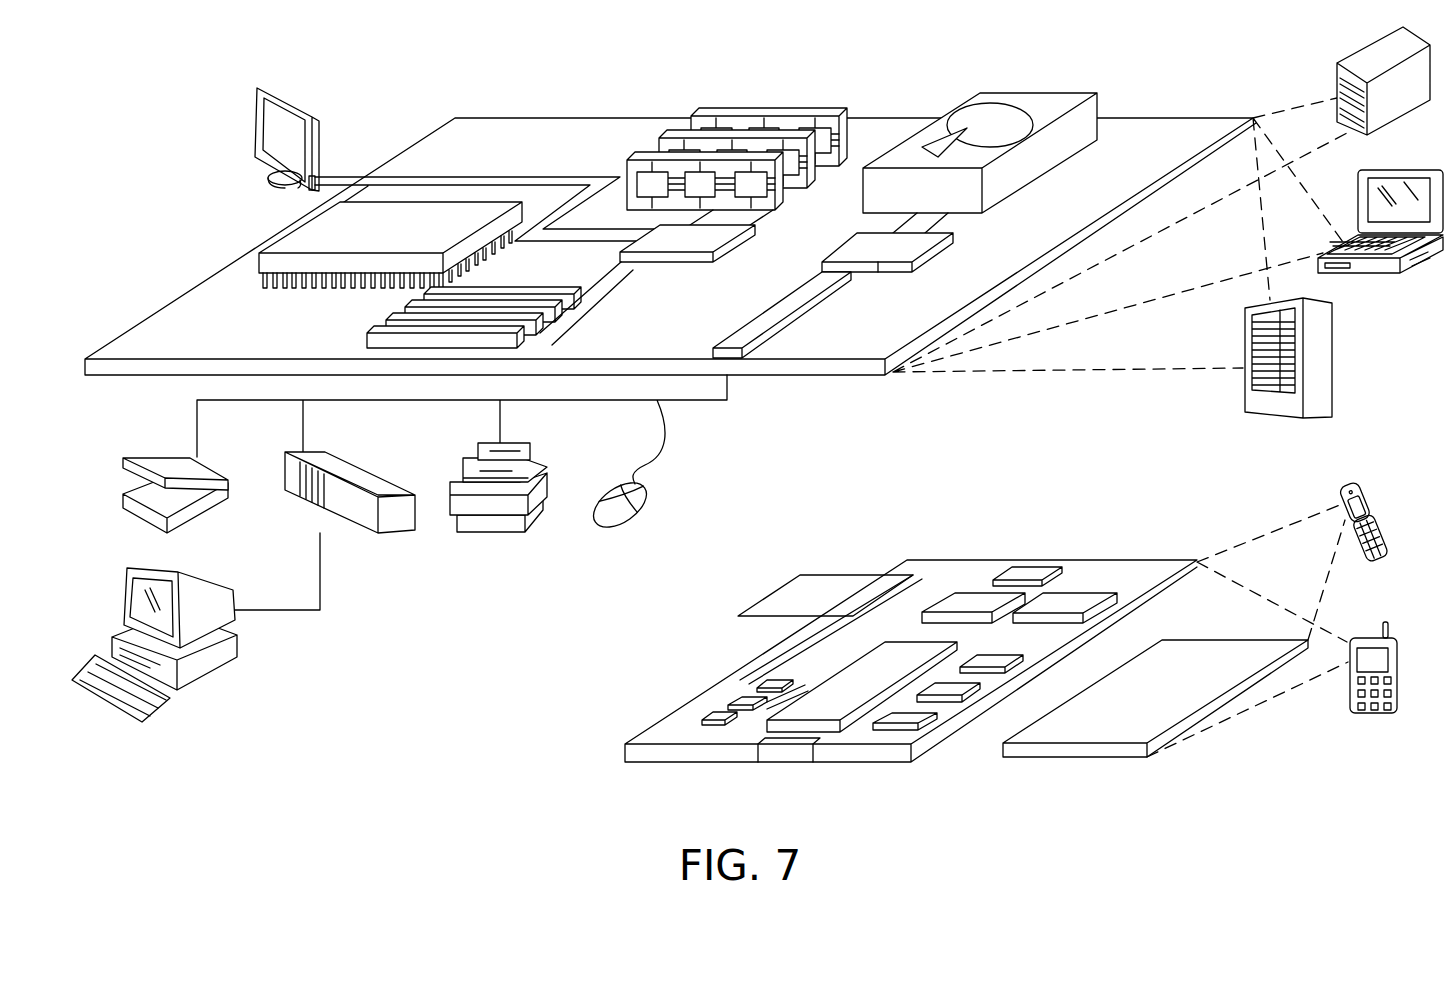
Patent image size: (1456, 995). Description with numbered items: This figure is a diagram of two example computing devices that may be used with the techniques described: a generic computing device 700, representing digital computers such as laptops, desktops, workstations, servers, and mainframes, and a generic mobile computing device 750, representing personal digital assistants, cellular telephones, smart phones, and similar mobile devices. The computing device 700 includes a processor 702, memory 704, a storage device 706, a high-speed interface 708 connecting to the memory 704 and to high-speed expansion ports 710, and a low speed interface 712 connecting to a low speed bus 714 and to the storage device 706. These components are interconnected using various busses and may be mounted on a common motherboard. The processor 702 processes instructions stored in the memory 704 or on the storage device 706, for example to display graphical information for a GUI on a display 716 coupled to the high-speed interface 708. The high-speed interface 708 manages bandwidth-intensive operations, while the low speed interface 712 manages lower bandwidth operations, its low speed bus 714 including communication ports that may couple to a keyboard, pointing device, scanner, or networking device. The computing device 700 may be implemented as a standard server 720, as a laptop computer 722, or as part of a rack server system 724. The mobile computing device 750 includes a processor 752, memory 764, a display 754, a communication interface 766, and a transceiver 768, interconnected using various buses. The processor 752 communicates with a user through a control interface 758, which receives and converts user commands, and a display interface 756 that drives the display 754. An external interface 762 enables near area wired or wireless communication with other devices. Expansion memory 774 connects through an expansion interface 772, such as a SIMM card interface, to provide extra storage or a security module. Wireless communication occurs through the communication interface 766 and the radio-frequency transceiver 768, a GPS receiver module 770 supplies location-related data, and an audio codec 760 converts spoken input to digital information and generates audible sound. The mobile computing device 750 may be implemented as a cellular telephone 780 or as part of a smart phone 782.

The computing device 700 is at (709, 410).
The processor 702 is at (287, 230).
The memory 704 is at (775, 110).
The storage device 706 is at (1027, 92).
The high-speed interface 708 is at (703, 240).
The high-speed expansion ports 710 is at (397, 314).
The low speed interface 712 is at (858, 240).
The low speed bus 714 is at (737, 346).
The display 716 is at (262, 88).
The standard server 720 is at (1360, 60).
The laptop computer 722 is at (1418, 168).
The rack server system 724 is at (1335, 358).
The mobile computing device 750 is at (582, 770).
The processor 752 is at (830, 692).
The display 754 is at (1197, 655).
The display interface 756 is at (913, 720).
The control interface 758 is at (953, 692).
The audio codec 760 is at (987, 655).
The external interface 762 is at (785, 750).
The memory 764 is at (733, 700).
The communication interface 766 is at (972, 600).
The transceiver 768 is at (1073, 595).
The GPS receiver module 770 is at (1030, 567).
The expansion interface 772 is at (888, 577).
The expansion memory 774 is at (800, 575).
The cellular telephone 780 is at (1355, 478).
The smart phone 782 is at (1368, 637).